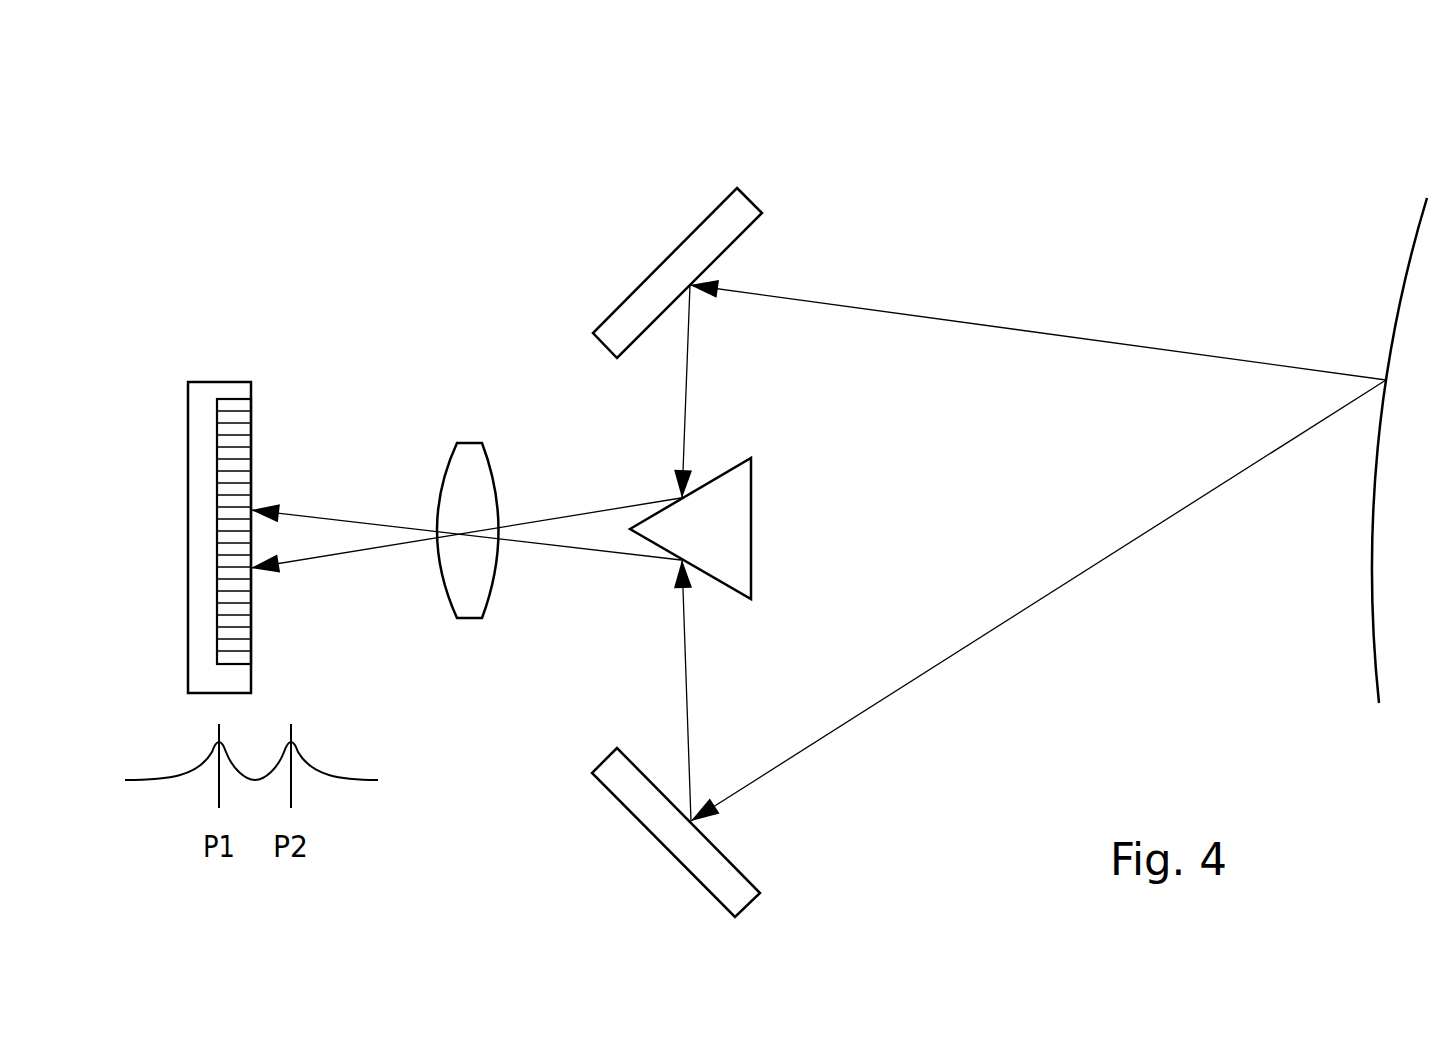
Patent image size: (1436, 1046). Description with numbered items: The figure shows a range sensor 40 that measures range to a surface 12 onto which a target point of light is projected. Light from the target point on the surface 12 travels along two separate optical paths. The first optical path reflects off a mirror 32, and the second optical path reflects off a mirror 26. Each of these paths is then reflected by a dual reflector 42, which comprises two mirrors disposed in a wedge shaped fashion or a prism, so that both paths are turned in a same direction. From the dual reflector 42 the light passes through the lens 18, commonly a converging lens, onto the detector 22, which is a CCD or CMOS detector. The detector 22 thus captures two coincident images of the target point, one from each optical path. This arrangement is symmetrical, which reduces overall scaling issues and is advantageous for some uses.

The range sensor 40 is at (350, 155).
The detector 22 is at (222, 388).
The lens 18 is at (464, 475).
The mirror 26 is at (740, 207).
The mirror 32 is at (643, 810).
The dual reflector 42 is at (735, 525).
The surface 12 is at (1402, 282).